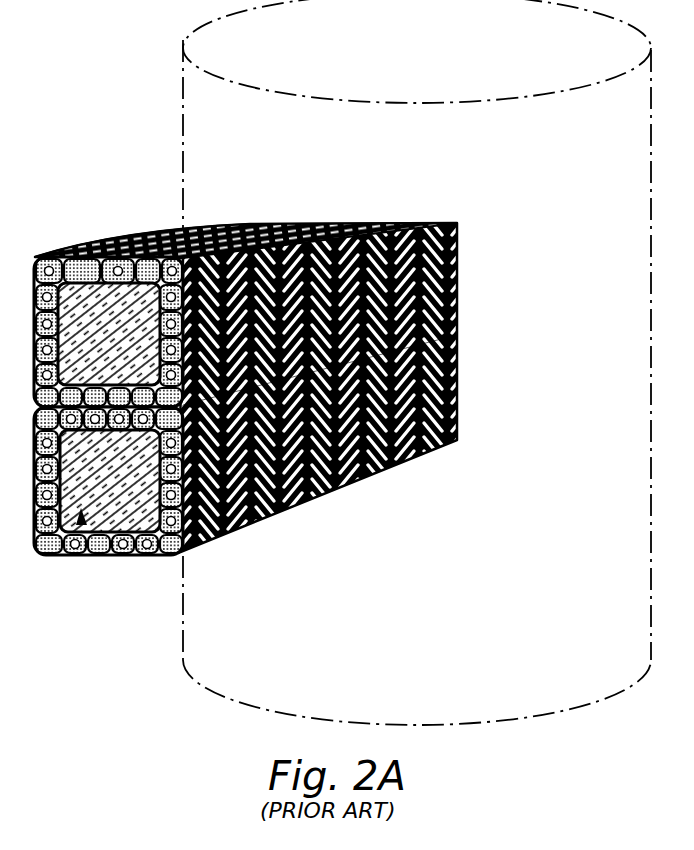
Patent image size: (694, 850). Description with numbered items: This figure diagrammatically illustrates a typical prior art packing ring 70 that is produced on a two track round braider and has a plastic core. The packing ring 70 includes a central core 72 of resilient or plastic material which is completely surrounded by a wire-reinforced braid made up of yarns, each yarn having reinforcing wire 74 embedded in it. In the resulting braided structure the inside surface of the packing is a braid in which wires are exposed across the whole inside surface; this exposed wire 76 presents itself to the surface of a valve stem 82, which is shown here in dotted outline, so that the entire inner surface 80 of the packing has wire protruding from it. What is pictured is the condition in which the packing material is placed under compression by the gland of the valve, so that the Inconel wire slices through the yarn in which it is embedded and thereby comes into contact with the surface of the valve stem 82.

The prior art packing ring 70 is at (270, 448).
The central core 72 is at (87, 558).
The reinforcing wire 74 is at (174, 553).
The exposed wire 76 is at (345, 480).
The inner surface of packing 80 is at (462, 334).
The valve stem 82 is at (594, 695).